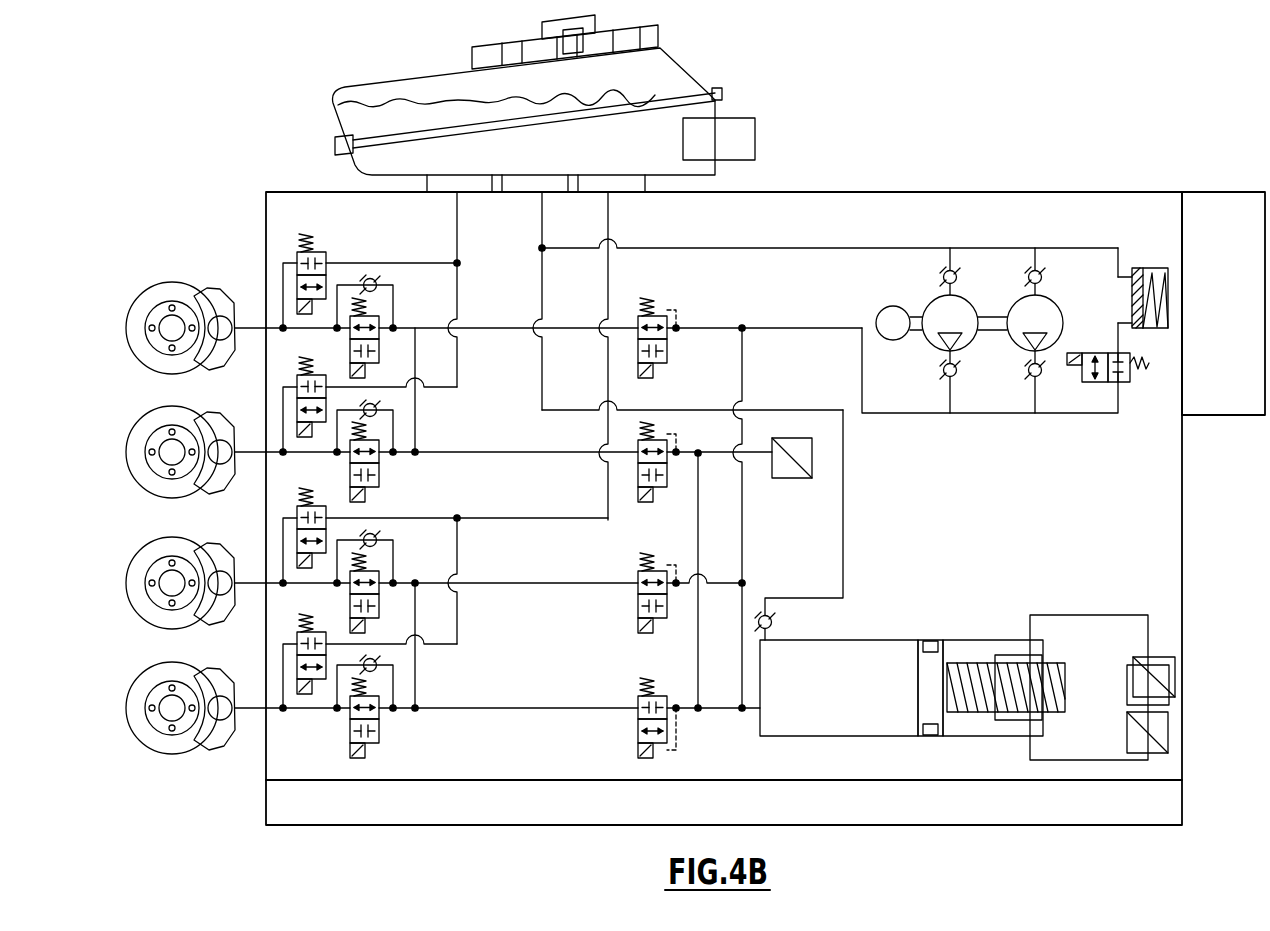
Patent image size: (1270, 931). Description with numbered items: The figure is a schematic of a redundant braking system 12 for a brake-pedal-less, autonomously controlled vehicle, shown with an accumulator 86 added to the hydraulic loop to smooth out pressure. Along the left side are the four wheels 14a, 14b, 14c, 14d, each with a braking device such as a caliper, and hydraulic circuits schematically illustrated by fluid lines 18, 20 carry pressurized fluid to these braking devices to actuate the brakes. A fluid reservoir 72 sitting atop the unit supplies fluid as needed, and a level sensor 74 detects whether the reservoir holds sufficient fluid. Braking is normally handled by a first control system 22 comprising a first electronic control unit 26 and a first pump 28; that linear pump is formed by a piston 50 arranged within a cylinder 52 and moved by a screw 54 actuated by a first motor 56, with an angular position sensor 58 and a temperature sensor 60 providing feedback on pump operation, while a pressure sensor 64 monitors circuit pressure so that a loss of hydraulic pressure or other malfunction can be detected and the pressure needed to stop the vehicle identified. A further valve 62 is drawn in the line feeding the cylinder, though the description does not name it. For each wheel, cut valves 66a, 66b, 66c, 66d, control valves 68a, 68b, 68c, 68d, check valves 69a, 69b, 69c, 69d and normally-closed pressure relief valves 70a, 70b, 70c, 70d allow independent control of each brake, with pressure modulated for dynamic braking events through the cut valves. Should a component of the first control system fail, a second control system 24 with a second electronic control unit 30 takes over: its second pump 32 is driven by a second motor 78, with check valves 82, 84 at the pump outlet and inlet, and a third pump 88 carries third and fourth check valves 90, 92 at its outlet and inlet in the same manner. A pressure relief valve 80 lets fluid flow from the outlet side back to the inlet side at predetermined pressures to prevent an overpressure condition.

The braking system 12 is at (1020, 68).
The wheel 14a is at (131, 308).
The wheel 14b is at (131, 432).
The wheel 14c is at (131, 563).
The wheel 14d is at (131, 688).
The fluid line 18 is at (484, 304).
The fluid line 20 is at (493, 732).
The first control system 22 is at (991, 571).
The second control system 24 is at (987, 442).
The first electronic control unit 26 is at (593, 810).
The first pump 28 is at (879, 628).
The second electronic control unit 30 is at (1225, 416).
The second pump 32 is at (922, 294).
The piston 50 is at (925, 706).
The cylinder 52 is at (820, 737).
The screw 54 is at (968, 668).
The first motor 56 is at (1093, 632).
The angular position sensor 58 is at (1177, 677).
The temperature sensor 60 is at (1170, 730).
The check valve 62 is at (773, 621).
The pressure sensor 64 is at (785, 479).
The cut valve 66a is at (678, 326).
The cut valve 66b is at (637, 484).
The cut valve 66c is at (637, 600).
The cut valve 66d is at (637, 733).
The control valve 68a is at (350, 348).
The control valve 68b is at (350, 472).
The control valve 68c is at (350, 603).
The control valve 68d is at (350, 727).
The check valve 69a is at (375, 277).
The check valve 69b is at (378, 403).
The check valve 69c is at (375, 534).
The check valve 69d is at (378, 659).
The pressure relief valve 70a is at (297, 257).
The pressure relief valve 70b is at (297, 381).
The pressure relief valve 70c is at (297, 511).
The pressure relief valve 70d is at (297, 637).
The fluid reservoir 72 is at (679, 56).
The level sensor 74 is at (756, 140).
The second motor 78 is at (876, 321).
The pressure relief valve 80 is at (1118, 385).
The check valve 82 is at (941, 373).
The check valve 84 is at (957, 273).
The accumulator 86 is at (1140, 266).
The third pump 88 is at (1057, 306).
The third check valve 90 is at (1027, 373).
The fourth check valve 92 is at (1042, 273).